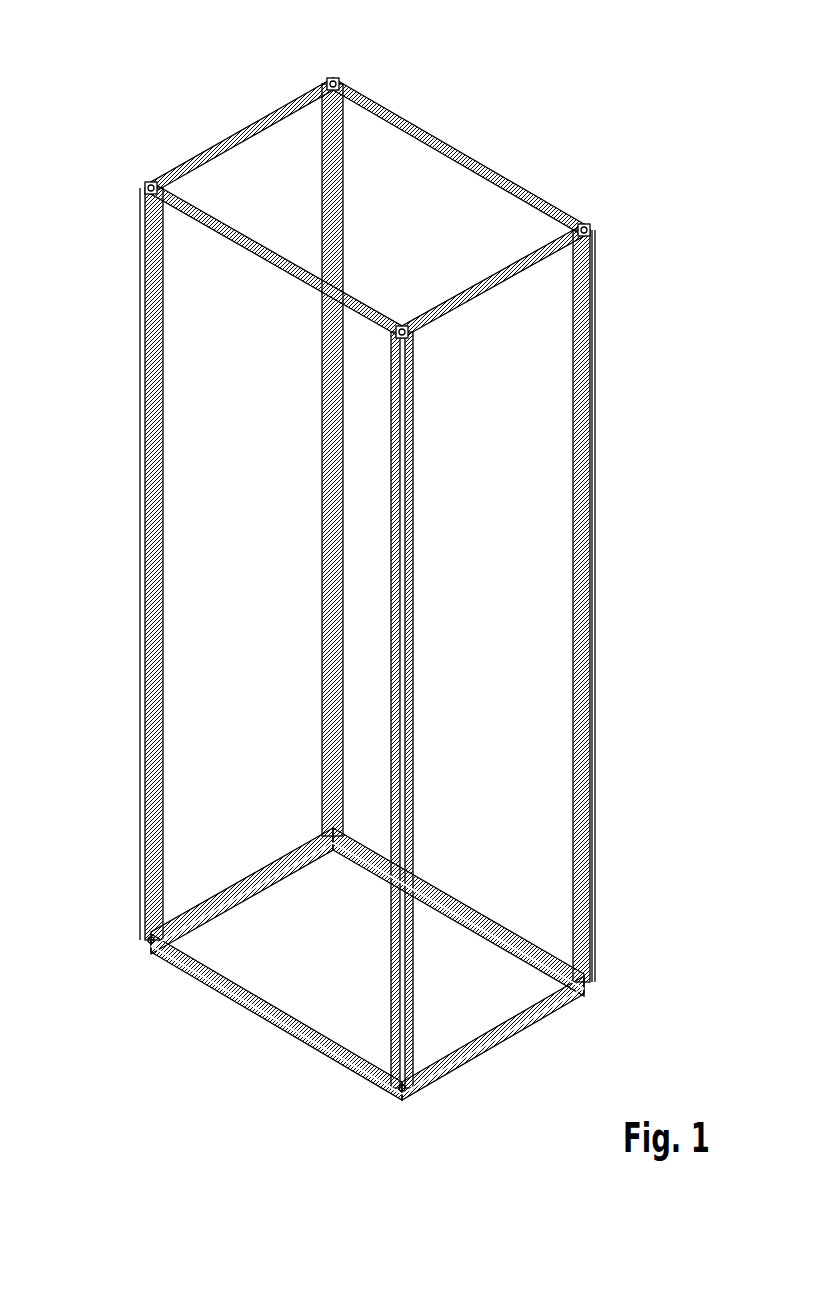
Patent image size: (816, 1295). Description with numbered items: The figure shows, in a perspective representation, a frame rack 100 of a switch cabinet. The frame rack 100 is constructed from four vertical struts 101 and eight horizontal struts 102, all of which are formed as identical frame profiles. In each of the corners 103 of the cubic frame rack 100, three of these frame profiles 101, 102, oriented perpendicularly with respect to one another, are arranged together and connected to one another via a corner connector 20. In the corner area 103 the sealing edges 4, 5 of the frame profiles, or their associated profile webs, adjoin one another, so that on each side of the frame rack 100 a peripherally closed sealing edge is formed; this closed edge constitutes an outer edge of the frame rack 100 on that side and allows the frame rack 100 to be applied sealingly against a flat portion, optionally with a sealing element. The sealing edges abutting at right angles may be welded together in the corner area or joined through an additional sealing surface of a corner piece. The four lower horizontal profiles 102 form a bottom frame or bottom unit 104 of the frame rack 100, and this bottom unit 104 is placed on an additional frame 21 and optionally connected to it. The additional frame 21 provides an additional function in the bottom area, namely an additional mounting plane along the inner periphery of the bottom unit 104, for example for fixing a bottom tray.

The frame rack 100 is at (576, 102).
The vertical strut 101 is at (322, 456).
The horizontal strut 102 is at (250, 124).
The corner 103 is at (331, 72).
The bottom unit 104 is at (344, 964).
The corner connector 20 is at (339, 82).
The additional frame 21 is at (274, 898).
The sealing edge 4 is at (597, 471).
The sealing edge 5 is at (141, 402).